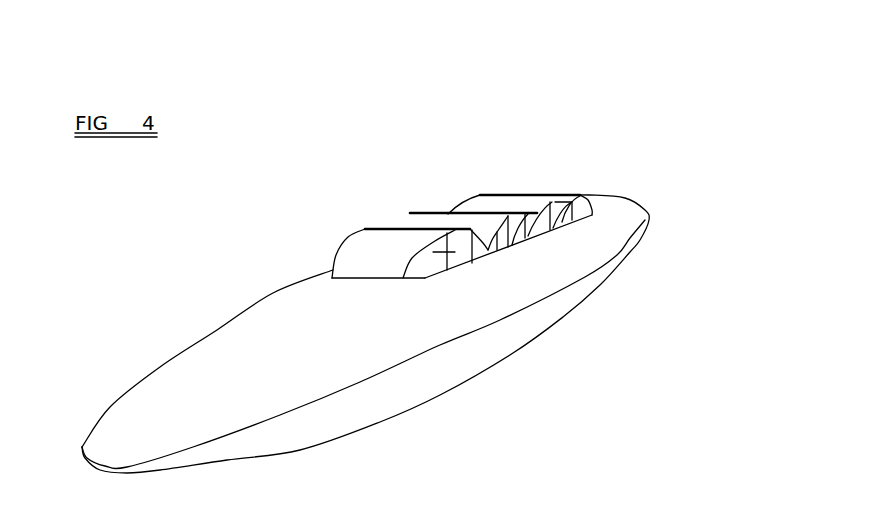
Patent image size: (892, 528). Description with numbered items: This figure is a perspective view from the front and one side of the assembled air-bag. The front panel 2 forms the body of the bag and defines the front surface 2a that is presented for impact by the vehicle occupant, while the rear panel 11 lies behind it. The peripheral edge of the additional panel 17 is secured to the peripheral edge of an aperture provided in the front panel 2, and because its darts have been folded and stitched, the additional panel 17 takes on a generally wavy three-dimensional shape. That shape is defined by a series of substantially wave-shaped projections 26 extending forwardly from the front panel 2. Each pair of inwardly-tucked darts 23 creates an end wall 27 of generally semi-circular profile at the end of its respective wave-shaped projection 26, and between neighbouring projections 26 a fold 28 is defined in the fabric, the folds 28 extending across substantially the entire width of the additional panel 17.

The front panel 2 is at (575, 243).
The front surface 2a is at (276, 289).
The rear panel 11 is at (452, 367).
The additional panel 17 is at (503, 186).
The inwardly-tucked darts 23 is at (503, 248).
The wave-shaped projections 26 is at (370, 242).
The end wall 27 is at (567, 212).
The fold 28 is at (465, 200).